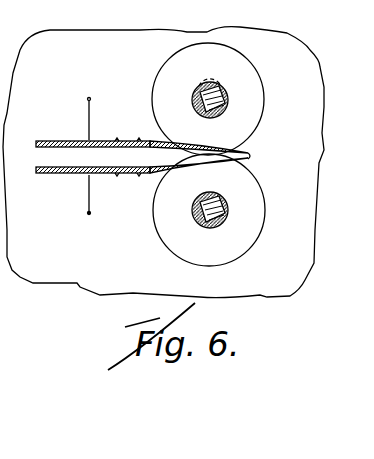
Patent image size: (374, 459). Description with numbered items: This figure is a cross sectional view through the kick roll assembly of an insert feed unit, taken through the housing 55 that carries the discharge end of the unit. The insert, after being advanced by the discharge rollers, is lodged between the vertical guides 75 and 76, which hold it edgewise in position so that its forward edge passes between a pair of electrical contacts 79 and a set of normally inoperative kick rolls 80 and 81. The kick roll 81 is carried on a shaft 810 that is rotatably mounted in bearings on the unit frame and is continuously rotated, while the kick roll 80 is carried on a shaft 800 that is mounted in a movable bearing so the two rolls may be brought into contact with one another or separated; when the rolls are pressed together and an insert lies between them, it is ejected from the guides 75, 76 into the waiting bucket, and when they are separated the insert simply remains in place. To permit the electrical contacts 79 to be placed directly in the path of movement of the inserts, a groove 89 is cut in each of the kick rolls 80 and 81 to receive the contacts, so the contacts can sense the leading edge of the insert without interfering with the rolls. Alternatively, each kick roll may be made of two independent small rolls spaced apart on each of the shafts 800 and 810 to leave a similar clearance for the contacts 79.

The housing 55 is at (0, 330).
The vertical guide 75 is at (58, 140).
The vertical guide 76 is at (53, 175).
The electrical contacts 79 is at (165, 140).
The kick roll 80 is at (255, 92).
The shaft 800 is at (222, 96).
The kick roll 81 is at (252, 212).
The shaft 810 is at (228, 203).
The groove 89 is at (229, 188).